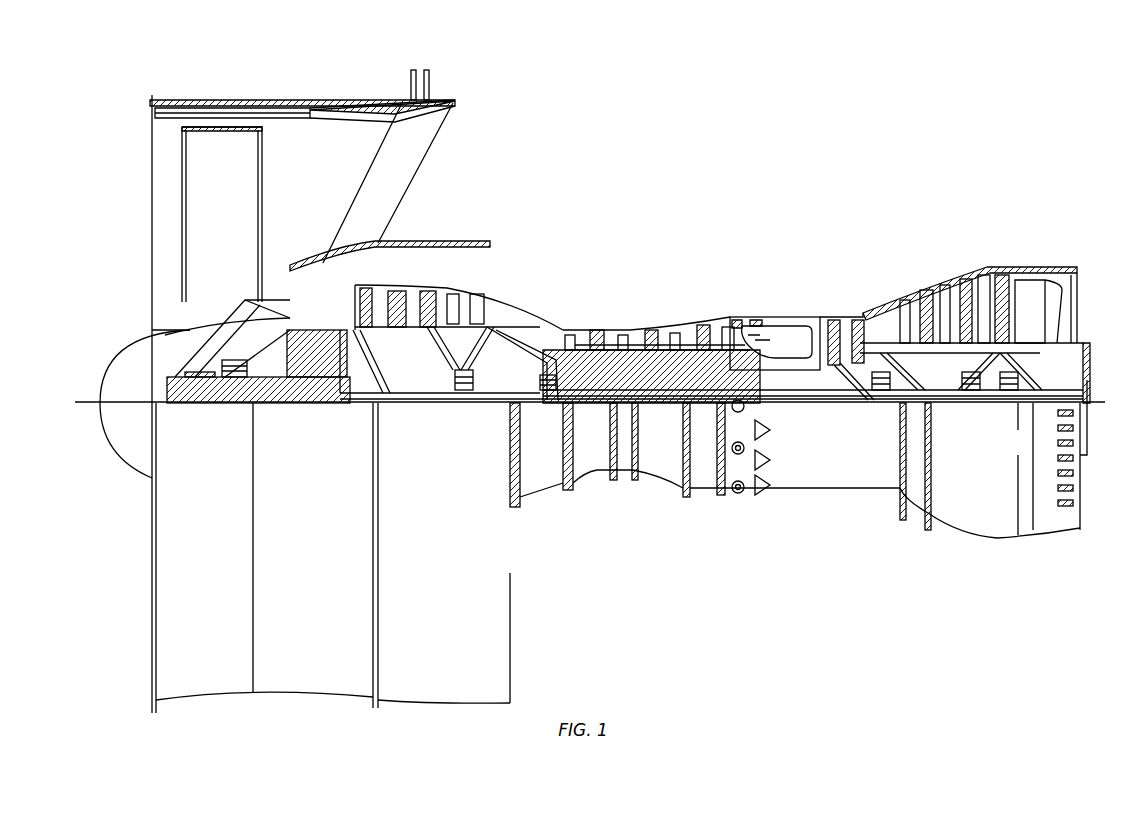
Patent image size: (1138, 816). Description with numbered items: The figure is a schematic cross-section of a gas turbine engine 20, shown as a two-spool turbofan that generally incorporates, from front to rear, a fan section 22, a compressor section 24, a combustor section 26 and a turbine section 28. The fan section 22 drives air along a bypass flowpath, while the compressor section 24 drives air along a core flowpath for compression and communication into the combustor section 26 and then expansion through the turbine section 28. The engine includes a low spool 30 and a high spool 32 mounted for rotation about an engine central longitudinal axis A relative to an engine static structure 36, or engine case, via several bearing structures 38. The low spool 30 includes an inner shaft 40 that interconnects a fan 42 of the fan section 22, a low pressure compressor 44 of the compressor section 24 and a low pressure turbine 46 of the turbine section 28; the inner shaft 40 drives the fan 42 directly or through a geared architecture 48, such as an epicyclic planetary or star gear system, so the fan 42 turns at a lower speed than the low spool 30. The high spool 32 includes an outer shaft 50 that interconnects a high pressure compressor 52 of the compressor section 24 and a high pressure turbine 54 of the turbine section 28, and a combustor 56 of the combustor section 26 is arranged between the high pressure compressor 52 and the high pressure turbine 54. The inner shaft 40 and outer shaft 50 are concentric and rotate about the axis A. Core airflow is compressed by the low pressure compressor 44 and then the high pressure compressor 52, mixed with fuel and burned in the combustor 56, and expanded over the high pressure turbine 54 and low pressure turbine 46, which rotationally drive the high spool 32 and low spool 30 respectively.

The gas turbine engine 20 is at (876, 138).
The fan section 22 is at (372, 76).
The compressor section 24 is at (383, 202).
The combustor section 26 is at (827, 202).
The turbine section 28 is at (1025, 202).
The low spool 30 is at (667, 405).
The high spool 32 is at (698, 325).
The engine static structure 36 is at (708, 490).
The bearing structures 38 is at (400, 456).
The inner shaft 40 is at (530, 405).
The fan 42 is at (228, 210).
The low pressure compressor 44 is at (447, 288).
The low pressure turbine 46 is at (966, 273).
The geared architecture 48 is at (330, 405).
The outer shaft 50 is at (782, 405).
The high pressure compressor 52 is at (643, 330).
The high pressure turbine 54 is at (838, 317).
The combustor 56 is at (775, 343).
The engine central longitudinal axis A is at (1106, 398).